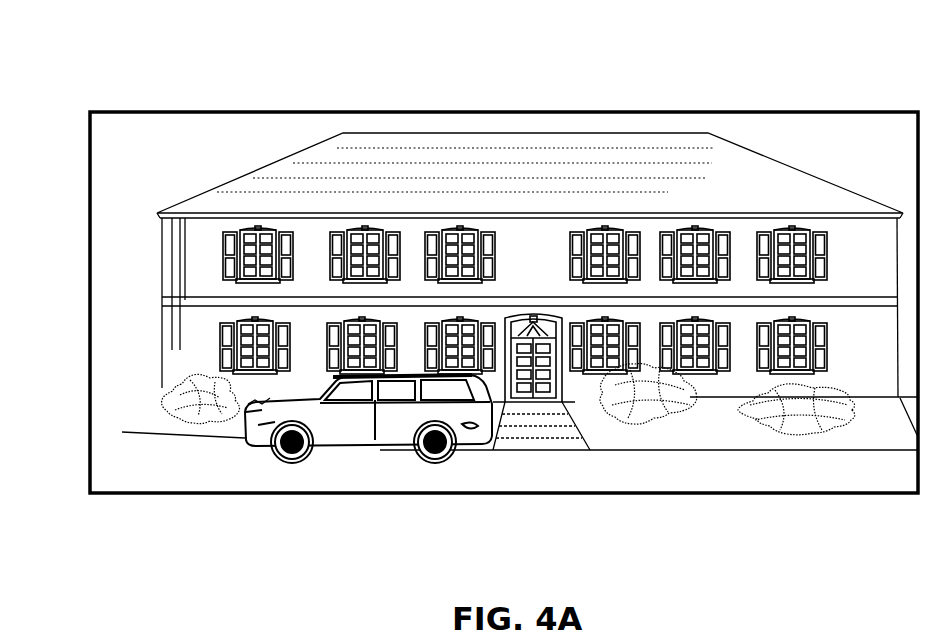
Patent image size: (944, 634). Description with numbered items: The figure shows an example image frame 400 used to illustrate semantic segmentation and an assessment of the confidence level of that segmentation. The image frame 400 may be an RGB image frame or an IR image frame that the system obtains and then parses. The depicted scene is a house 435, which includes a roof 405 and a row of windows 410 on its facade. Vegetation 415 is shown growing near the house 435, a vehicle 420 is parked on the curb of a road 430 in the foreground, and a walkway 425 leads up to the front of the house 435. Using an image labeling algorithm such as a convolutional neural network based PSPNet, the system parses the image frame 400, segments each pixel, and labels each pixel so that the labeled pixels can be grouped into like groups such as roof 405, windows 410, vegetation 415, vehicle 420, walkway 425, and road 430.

The image frame 400 is at (853, 88).
The roof 405 is at (214, 192).
The windows 410 is at (222, 258).
The vegetation 415 is at (215, 415).
The vehicle 420 is at (370, 447).
The walkway 425 is at (513, 442).
The road 430 is at (655, 478).
The house 435 is at (866, 160).